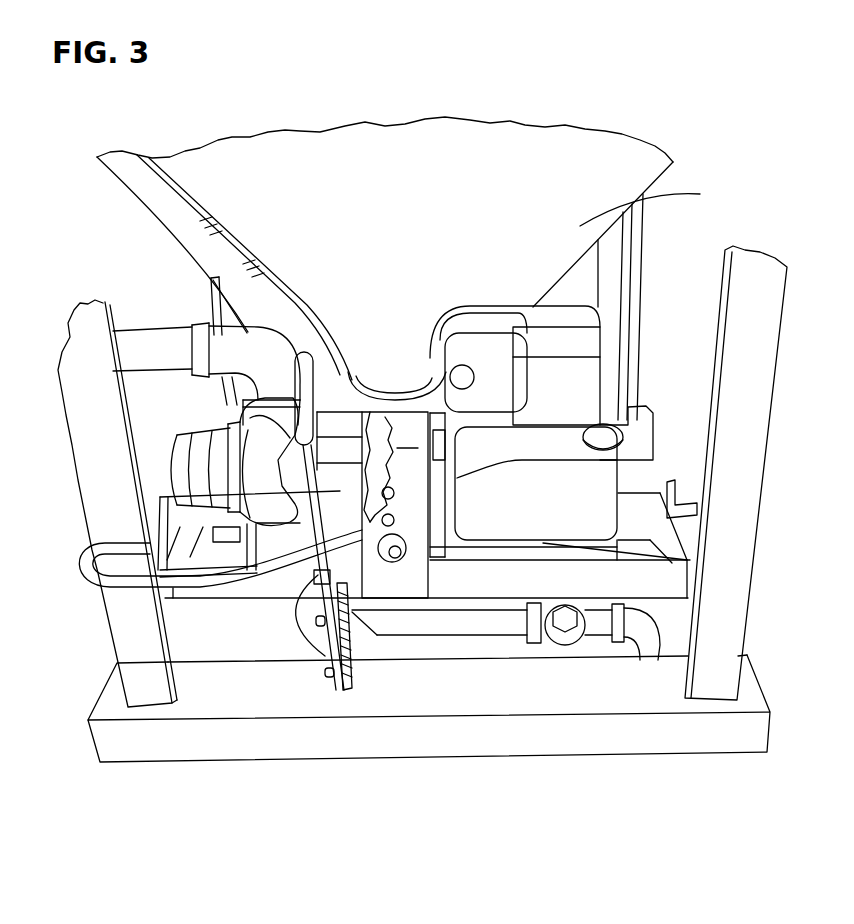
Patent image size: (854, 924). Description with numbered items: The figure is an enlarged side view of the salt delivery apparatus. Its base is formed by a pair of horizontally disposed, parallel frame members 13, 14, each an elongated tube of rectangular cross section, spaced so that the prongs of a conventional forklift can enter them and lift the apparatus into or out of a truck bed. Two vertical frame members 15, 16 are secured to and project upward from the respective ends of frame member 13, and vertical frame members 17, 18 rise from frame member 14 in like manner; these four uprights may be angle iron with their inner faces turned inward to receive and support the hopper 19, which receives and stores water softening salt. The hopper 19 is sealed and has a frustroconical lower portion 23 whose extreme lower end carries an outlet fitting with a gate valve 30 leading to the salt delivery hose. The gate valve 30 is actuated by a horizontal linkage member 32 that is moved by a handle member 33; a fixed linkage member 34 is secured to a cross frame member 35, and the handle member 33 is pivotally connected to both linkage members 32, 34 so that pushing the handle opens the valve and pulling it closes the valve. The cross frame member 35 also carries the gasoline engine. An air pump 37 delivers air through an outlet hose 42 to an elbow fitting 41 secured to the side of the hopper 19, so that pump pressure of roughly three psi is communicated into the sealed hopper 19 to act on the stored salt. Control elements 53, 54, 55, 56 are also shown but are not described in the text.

The frame member 13 is at (432, 737).
The frame member 14 is at (558, 433).
The vertical frame member 15 is at (117, 503).
The vertical frame member 16 is at (724, 473).
The vertical frame member 17 is at (191, 327).
The vertical frame member 18 is at (659, 307).
The hopper 19 is at (214, 160).
The frustroconical lower portion 23 is at (655, 203).
The gate valve 30 is at (366, 443).
The horizontal linkage member 32 is at (355, 551).
The handle member 33 is at (291, 608).
The fixed linkage member 34 is at (363, 641).
The cross frame member 35 is at (220, 588).
The air pump 37 is at (218, 484).
The elbow fitting 41 is at (266, 354).
The air outlet hose 42 is at (145, 319).
The control box 53 is at (411, 553).
The knob 54 is at (427, 566).
The switch 55 is at (444, 517).
The switch 56 is at (442, 493).